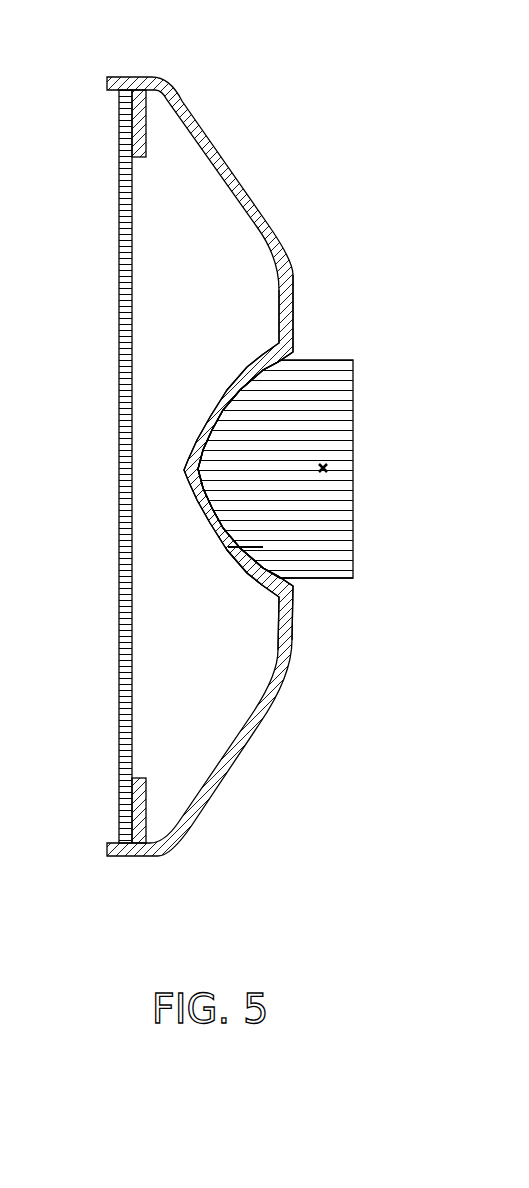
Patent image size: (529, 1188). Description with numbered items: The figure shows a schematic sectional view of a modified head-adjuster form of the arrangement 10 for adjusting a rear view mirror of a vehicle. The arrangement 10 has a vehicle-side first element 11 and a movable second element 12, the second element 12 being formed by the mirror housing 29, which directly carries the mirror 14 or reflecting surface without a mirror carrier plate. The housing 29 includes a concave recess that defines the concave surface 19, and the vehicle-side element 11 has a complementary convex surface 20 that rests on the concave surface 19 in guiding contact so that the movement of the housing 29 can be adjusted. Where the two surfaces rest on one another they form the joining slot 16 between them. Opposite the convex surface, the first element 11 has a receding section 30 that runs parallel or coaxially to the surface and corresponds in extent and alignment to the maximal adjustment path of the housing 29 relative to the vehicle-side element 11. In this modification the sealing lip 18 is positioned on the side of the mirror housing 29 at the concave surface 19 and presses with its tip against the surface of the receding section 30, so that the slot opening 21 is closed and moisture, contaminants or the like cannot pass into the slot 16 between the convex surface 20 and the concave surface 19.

The arrangement for adjusting rear view mirrors 10 is at (381, 164).
The vehicle-side first element 11 is at (369, 460).
The movable second element 12 is at (299, 253).
The mirror 14 is at (119, 705).
The joining slot 16 is at (213, 546).
The sealing lip 18 is at (254, 586).
The concave surface 19 is at (296, 368).
The convex surface 20 is at (238, 377).
The slot opening 21 is at (297, 584).
The mirror housing 29 is at (164, 77).
The receding section 30 is at (240, 548).